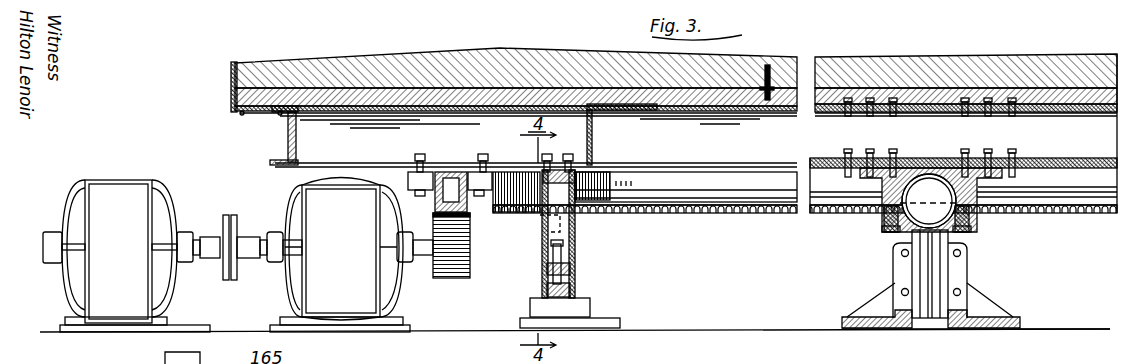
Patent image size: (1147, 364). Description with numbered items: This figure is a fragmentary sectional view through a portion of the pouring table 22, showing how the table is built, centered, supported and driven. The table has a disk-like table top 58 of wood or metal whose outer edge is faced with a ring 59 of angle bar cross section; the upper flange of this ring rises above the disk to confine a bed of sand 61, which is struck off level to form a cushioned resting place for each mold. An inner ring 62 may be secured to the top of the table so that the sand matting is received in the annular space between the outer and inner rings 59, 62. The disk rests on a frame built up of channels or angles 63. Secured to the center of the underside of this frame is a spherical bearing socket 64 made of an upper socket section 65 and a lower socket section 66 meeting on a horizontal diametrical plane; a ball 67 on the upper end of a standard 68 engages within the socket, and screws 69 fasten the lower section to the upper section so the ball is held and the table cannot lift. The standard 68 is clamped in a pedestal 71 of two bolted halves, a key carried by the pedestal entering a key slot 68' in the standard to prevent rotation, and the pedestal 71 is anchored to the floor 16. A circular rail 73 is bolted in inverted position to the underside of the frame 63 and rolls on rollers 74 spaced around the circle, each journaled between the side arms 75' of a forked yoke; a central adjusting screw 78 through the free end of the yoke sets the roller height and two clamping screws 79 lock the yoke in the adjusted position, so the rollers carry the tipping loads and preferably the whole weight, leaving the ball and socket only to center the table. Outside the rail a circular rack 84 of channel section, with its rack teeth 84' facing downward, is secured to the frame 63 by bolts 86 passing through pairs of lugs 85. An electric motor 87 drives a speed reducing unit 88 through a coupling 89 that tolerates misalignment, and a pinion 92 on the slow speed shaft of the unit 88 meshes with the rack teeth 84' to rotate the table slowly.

The pouring table 22 is at (233, 64).
The ring of angle bar cross section 59 is at (233, 84).
The bed of sand 61 is at (398, 70).
The table top 58 is at (447, 92).
The inner ring 62 is at (770, 75).
The channels or angles 63 is at (288, 144).
The lugs 85 is at (408, 178).
The bolts 86 is at (478, 158).
The circular rail 73 is at (600, 185).
The spherical bearing socket 64 is at (948, 170).
The upper socket section 65 is at (978, 189).
The circular rack 84 is at (432, 201).
The rack teeth 84' is at (805, 211).
The speed reducing unit 88 is at (310, 195).
The electric motor 87 is at (68, 210).
The coupling 89 is at (227, 280).
The pinion 92 is at (445, 280).
The rollers 74 is at (540, 225).
The side arms 75' is at (558, 249).
The central adjusting screw 78 is at (561, 258).
The clamping screws 79 is at (547, 286).
The screws 69 is at (886, 228).
The ball 67 is at (913, 227).
The standard 68 is at (901, 273).
The key slot 68' is at (882, 275).
The lower socket section 66 is at (980, 225).
The pedestal 71 is at (970, 278).
The floor 16 is at (1043, 329).